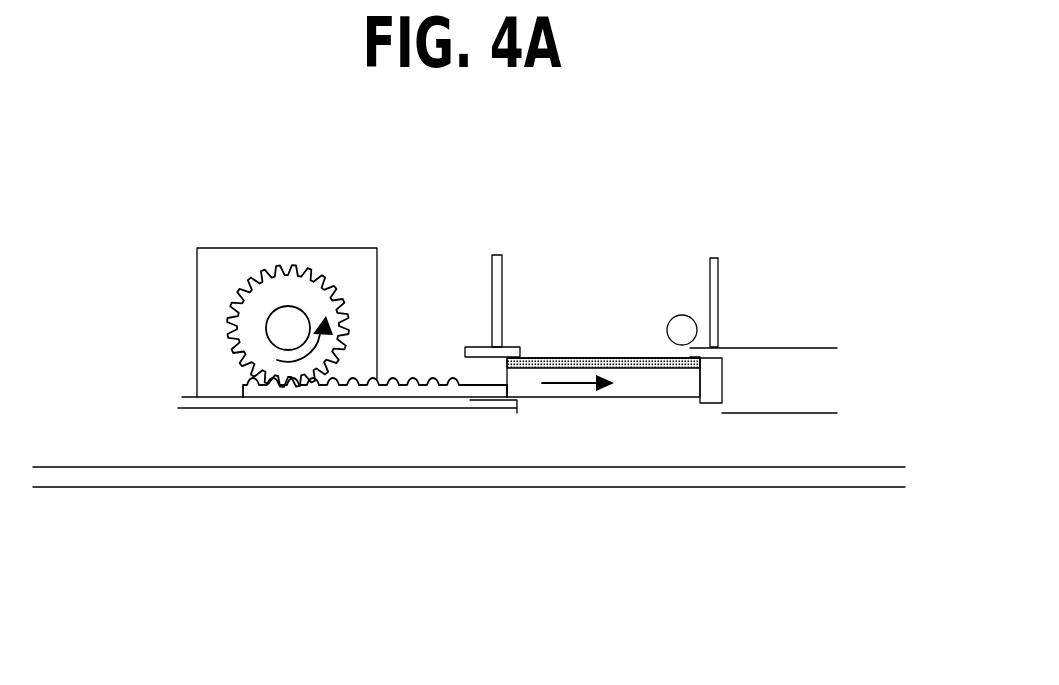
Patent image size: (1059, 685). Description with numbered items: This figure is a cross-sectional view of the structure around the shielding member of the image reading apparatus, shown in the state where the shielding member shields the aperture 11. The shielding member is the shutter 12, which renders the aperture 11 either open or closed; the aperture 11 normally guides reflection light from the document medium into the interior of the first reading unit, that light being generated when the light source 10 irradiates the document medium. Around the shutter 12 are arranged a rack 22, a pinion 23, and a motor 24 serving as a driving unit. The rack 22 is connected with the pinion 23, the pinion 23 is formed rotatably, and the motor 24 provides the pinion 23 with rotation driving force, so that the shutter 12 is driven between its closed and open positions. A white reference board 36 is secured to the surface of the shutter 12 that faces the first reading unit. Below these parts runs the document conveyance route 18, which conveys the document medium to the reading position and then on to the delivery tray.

The light source 10 is at (681, 325).
The aperture 11 is at (600, 343).
The shutter 12 is at (663, 383).
The document conveyance route 18 is at (473, 438).
The rack 22 is at (366, 383).
The pinion 23 is at (240, 310).
The motor 24 is at (333, 270).
The white reference board 36 is at (550, 360).